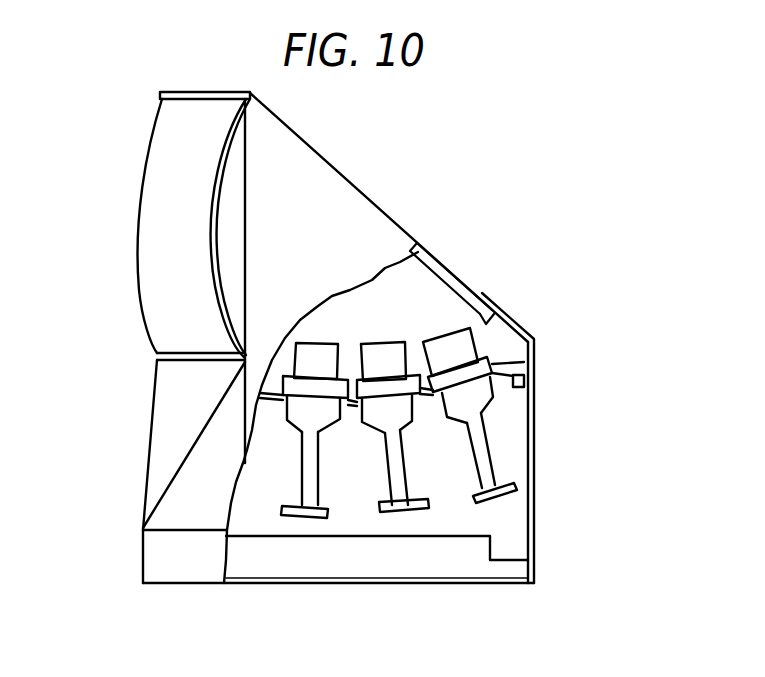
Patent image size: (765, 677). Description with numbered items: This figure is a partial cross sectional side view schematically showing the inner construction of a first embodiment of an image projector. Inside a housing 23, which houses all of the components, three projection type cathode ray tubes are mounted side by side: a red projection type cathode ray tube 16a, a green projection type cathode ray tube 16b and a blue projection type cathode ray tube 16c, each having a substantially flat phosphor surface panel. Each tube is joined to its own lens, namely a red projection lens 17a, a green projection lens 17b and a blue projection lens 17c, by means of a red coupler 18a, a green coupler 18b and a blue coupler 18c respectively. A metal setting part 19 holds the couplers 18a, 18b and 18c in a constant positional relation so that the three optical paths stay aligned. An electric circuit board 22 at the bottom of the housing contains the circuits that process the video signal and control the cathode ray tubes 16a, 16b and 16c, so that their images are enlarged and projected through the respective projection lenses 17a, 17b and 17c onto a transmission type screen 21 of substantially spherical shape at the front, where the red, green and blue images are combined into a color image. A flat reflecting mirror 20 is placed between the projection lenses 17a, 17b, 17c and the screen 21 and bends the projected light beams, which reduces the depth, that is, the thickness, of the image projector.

The transmission type screen 21 is at (137, 183).
The housing 23 is at (348, 178).
The flat reflecting mirror 20 is at (418, 249).
The metal setting part 19 is at (528, 355).
The electric circuit board 22 is at (492, 560).
The red projection lens 17a is at (327, 343).
The green projection lens 17b is at (398, 343).
The blue projection lens 17c is at (452, 330).
The red coupler 18a is at (312, 397).
The green coupler 18b is at (383, 398).
The blue coupler 18c is at (463, 382).
The red projection type cathode ray tube 16a is at (300, 475).
The green projection type cathode ray tube 16b is at (398, 478).
The blue projection type cathode ray tube 16c is at (482, 472).